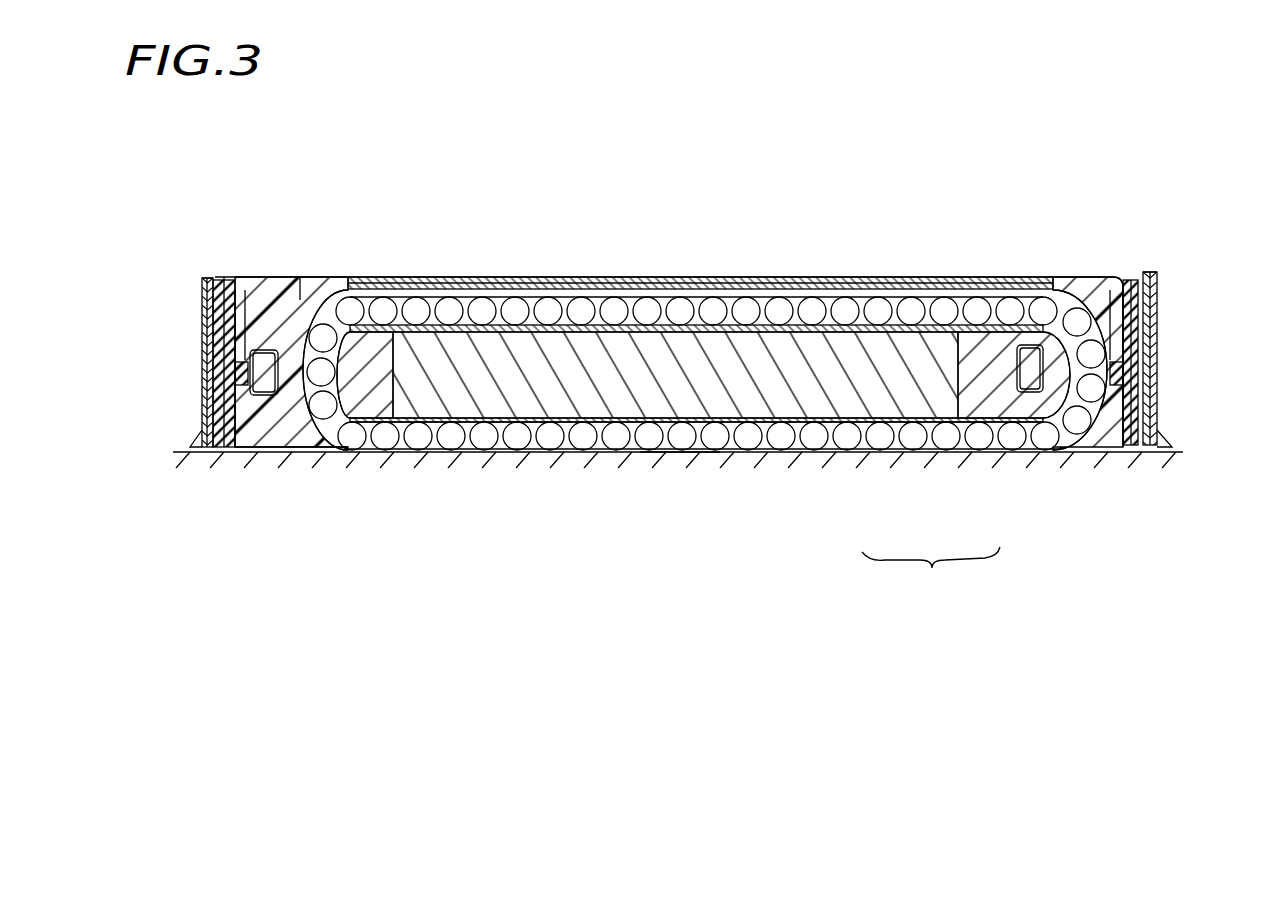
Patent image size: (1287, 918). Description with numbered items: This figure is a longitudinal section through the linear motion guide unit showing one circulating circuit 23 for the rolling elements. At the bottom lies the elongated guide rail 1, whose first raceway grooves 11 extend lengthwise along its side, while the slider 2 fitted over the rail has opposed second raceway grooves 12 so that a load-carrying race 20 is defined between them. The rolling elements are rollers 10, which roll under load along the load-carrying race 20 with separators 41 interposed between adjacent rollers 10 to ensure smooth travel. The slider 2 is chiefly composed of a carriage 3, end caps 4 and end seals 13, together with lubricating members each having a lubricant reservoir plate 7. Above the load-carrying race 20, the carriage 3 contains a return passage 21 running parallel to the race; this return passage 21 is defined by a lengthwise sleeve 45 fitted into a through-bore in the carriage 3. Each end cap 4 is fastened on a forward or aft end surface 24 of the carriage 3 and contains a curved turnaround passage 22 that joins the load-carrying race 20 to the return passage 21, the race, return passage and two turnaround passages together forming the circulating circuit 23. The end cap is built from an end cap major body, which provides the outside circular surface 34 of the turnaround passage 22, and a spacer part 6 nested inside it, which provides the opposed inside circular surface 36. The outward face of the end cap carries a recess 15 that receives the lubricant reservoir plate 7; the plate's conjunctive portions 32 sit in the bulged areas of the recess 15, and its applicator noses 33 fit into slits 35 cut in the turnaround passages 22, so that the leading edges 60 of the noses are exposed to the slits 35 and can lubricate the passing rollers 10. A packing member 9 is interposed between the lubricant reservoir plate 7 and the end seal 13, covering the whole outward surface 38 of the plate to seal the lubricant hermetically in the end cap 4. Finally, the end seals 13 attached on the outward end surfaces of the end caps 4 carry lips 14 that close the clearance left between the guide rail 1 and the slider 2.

The guide rail 1 is at (723, 460).
The slider 2 is at (1018, 268).
The carriage 3 is at (812, 277).
The end cap 4 is at (295, 300).
The spacer part 6 is at (375, 365).
The lubricant reservoir plate 7 is at (253, 278).
The packing member 9 is at (193, 278).
The roller 10 is at (647, 307).
The first raceway groove 11 is at (617, 440).
The second raceway groove 12 is at (677, 452).
The end seal 13 is at (200, 300).
The lip 14 is at (198, 445).
The recess 15 is at (228, 450).
The load-carrying race 20 is at (437, 453).
The return passage 21 is at (490, 296).
The turnaround passage 22 is at (318, 448).
The circulating circuit 23 is at (931, 577).
The end surface 24 is at (385, 405).
The conjunctive portion 32 is at (224, 277).
The applicator nose 33 is at (247, 453).
The outside circular surface 34 is at (352, 300).
The slit 35 is at (277, 277).
The inside circular surface 36 is at (340, 435).
The outward surface 38 is at (205, 365).
The separator 41 is at (730, 305).
The sleeve 45 is at (553, 278).
The leading edge 60 is at (268, 348).